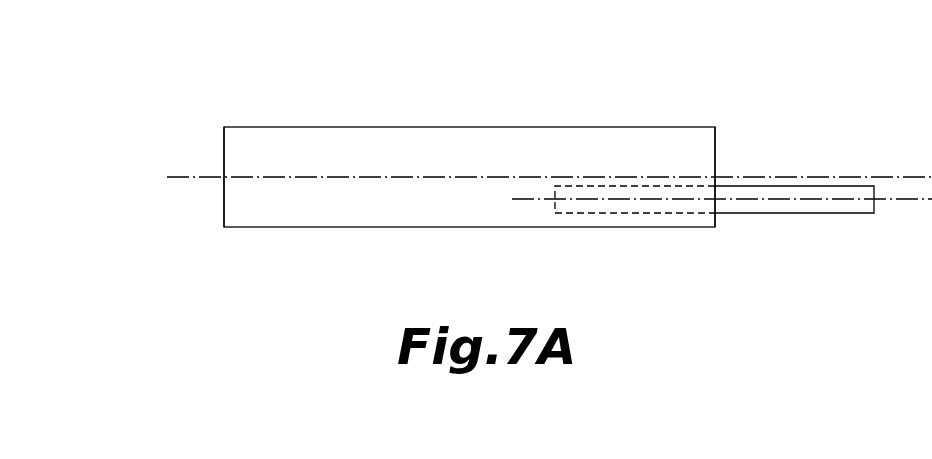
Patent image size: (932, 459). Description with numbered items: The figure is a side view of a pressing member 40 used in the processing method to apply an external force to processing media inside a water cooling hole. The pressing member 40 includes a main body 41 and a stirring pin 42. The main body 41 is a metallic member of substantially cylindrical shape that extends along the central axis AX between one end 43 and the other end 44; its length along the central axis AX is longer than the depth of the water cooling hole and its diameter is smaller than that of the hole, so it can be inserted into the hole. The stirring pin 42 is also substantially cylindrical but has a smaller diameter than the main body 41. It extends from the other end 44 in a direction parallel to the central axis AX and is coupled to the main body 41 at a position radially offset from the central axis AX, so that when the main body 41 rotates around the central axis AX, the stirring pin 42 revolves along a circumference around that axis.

The pressing member 40 is at (629, 83).
The main body 41 is at (566, 127).
The stirring pin 42 is at (795, 186).
The one end 43 is at (224, 150).
The other end 44 is at (715, 130).
The central axis AX is at (198, 179).